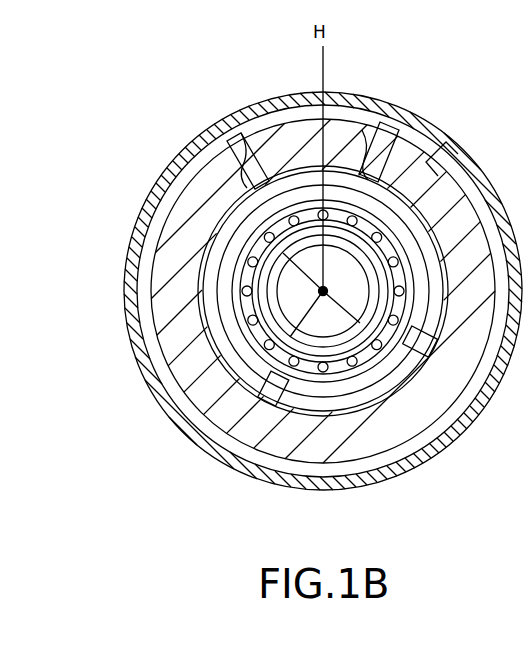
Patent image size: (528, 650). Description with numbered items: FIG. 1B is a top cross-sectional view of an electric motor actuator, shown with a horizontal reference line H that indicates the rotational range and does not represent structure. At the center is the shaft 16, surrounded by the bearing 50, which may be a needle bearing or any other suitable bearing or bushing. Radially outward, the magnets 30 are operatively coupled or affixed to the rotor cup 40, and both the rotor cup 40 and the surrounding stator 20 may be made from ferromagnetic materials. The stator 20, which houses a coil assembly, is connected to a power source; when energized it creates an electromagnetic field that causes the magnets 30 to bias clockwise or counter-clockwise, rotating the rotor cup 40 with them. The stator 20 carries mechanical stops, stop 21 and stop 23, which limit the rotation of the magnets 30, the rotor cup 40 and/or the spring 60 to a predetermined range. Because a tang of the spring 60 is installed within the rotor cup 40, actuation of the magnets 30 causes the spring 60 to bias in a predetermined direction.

The stator 20 is at (186, 155).
The stop 21 is at (246, 130).
The magnets 30 is at (353, 130).
The stop 23 is at (436, 162).
The rotor cup 40 is at (257, 236).
The shaft 16 is at (290, 313).
The bearing 50 is at (278, 392).
The spring 60 is at (385, 348).